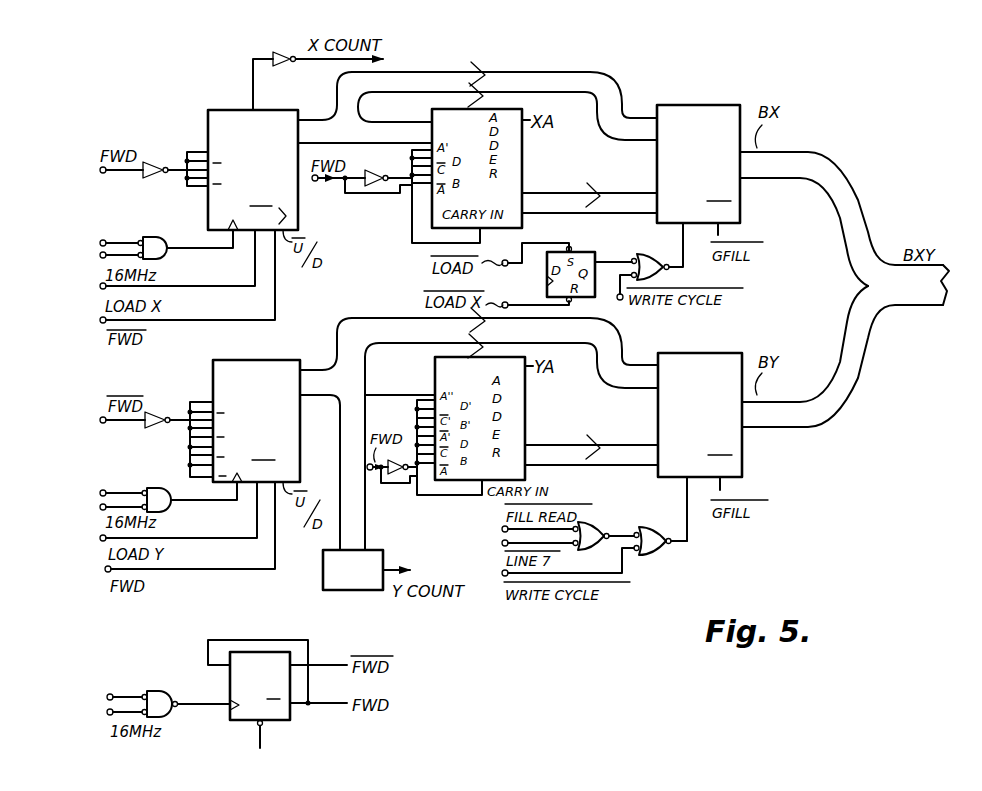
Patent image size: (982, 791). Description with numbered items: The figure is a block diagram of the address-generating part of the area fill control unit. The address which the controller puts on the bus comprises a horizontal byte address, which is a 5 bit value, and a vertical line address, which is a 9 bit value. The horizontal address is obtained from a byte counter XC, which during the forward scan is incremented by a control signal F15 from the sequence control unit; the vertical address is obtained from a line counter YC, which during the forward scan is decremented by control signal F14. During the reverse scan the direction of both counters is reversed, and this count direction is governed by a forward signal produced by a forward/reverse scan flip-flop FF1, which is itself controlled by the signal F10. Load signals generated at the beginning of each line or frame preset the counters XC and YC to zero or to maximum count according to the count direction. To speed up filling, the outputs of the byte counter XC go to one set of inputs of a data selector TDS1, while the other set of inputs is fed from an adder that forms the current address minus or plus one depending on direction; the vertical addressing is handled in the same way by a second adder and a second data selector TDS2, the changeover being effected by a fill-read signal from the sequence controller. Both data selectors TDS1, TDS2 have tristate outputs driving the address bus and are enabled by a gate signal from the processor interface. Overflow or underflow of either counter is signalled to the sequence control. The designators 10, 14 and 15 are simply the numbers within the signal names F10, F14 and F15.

The 5-bit horizontal address 5 is at (307, 143).
The 9-bit vertical address 9 is at (308, 403).
The byte counter XC is at (237, 112).
The line counter YC is at (265, 362).
The data selector TDS1 is at (698, 147).
The data selector TDS2 is at (700, 400).
The forward/reverse scan flip-flop FF1 is at (277, 683).
The control signal F10 is at (168, 696).
The control signal F14 is at (168, 491).
The control signal F15 is at (166, 239).
The NAND gate F10 10 is at (168, 696).
The NAND gate F14 14 is at (168, 491).
The NAND gate F15 15 is at (166, 239).